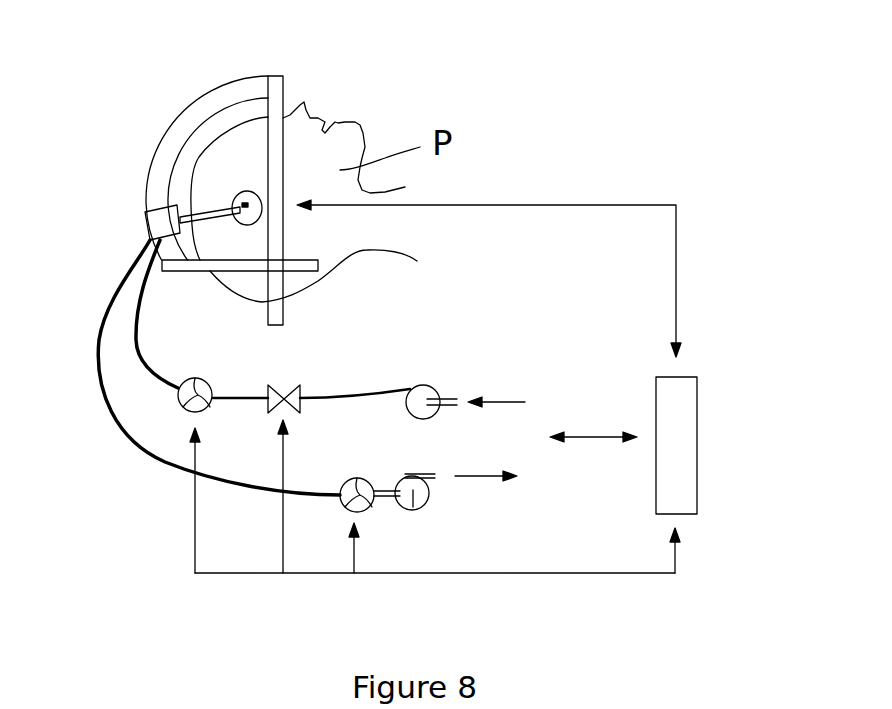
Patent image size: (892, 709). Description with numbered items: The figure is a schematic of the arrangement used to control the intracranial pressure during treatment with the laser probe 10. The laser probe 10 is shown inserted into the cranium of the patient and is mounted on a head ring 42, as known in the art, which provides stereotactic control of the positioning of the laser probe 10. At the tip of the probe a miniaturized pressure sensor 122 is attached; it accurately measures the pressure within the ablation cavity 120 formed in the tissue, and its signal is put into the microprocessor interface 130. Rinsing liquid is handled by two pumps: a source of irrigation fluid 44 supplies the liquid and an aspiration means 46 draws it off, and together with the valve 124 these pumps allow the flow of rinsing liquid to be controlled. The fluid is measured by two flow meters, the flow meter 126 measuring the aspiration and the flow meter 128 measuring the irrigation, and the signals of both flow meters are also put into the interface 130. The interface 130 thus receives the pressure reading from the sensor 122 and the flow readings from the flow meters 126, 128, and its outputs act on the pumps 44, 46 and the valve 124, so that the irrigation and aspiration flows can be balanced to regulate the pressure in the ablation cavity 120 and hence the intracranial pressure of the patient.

The laser probe 10 is at (173, 218).
The head ring 42 is at (255, 88).
The source of irrigation fluid 44 is at (422, 393).
The aspiration means 46 is at (417, 507).
The ablation cavity 120 is at (245, 198).
The miniaturized pressure sensor 122 is at (243, 205).
The valve 124 is at (292, 390).
The flow meter 126 is at (345, 480).
The flow meter 128 is at (172, 395).
The microprocessor interface 130 is at (697, 442).